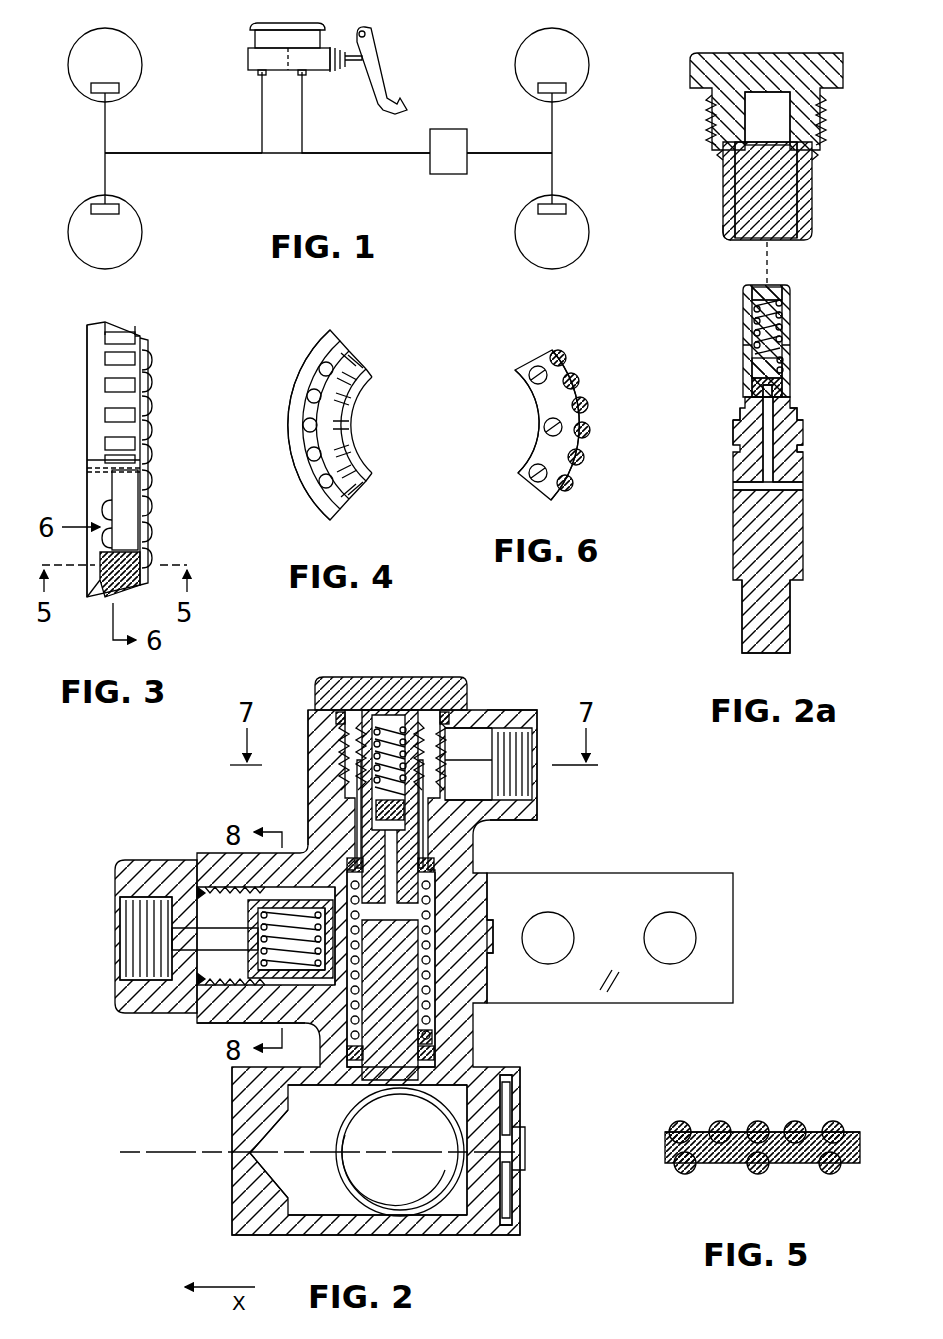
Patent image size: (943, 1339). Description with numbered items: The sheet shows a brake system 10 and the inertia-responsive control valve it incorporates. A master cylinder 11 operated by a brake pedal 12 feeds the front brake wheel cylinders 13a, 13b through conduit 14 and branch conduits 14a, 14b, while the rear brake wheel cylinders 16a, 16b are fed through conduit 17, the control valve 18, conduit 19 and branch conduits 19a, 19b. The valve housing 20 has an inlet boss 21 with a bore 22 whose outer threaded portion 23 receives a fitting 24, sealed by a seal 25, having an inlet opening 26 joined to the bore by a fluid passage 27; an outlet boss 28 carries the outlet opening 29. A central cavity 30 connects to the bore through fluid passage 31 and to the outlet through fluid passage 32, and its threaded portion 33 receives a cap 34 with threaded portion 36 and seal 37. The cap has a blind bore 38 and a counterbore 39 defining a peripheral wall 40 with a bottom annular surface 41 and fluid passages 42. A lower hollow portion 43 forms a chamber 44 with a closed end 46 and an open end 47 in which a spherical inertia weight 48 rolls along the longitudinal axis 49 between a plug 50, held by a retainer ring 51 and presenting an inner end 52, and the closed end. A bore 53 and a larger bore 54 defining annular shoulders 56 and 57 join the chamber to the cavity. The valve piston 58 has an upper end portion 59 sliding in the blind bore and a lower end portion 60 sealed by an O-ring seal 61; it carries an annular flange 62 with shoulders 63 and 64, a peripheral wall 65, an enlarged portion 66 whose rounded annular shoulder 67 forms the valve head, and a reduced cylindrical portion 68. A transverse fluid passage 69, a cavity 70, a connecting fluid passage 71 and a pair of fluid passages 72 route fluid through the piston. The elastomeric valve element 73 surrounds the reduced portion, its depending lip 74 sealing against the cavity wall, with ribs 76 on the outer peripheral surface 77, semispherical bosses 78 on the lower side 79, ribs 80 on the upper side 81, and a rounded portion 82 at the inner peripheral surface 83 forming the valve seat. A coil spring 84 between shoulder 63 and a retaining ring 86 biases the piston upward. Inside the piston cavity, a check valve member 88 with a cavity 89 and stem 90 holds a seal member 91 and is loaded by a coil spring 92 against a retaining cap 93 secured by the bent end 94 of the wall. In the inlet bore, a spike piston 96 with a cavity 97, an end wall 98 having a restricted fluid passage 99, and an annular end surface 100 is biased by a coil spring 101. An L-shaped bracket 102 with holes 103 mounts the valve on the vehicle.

In FIG. 1, the brake system 10 is at (466, 66).
In FIG. 1, the master cylinder 11 is at (250, 42).
In FIG. 1, the brake pedal 12 is at (383, 60).
In FIG. 1, the front brake wheel cylinder 13a is at (108, 78).
In FIG. 1, the front brake wheel cylinder 13b is at (108, 248).
In FIG. 1, the conduit 14 is at (222, 154).
In FIG. 1, the branch conduit 14a is at (103, 133).
In FIG. 1, the branch conduit 14b is at (103, 176).
In FIG. 1, the rear brake wheel cylinder 16a is at (553, 78).
In FIG. 1, the rear brake wheel cylinder 16b is at (553, 248).
In FIG. 1, the conduit 17 is at (355, 154).
In FIG. 1, the control valve 18 is at (447, 175).
In FIG. 2, the control valve 18 is at (206, 782).
In FIG. 1, the conduit 19 is at (507, 154).
In FIG. 1, the branch conduit 19a is at (553, 130).
In FIG. 1, the branch conduit 19b is at (553, 168).
In FIG. 2, the housing 20 is at (320, 792).
In FIG. 2, the inlet boss 21 is at (237, 1039).
In FIG. 2, the bore 22 is at (278, 888).
In FIG. 2, the outer threaded portion 23 is at (216, 888).
In FIG. 2, the fitting 24 is at (144, 860).
In FIG. 2, the seal 25 is at (200, 888).
In FIG. 2, the inlet opening 26 is at (125, 972).
In FIG. 2, the fluid passage 27 is at (172, 942).
In FIG. 2, the outlet boss 28 is at (525, 712).
In FIG. 2, the outlet opening 29 is at (530, 797).
In FIG. 2, the central cavity 30 is at (432, 942).
In FIG. 2, the fluid passage 31 is at (336, 980).
In FIG. 2, the fluid passage 32 is at (462, 780).
In FIG. 2, the threaded portion 33 is at (340, 772).
In FIG. 2A, the cap 34 is at (832, 58).
In FIG. 2, the cap 34 is at (436, 690).
In FIG. 2A, the threaded portion 36 is at (822, 118).
In FIG. 2, the seal 37 is at (446, 715).
In FIG. 2A, the central blind bore 38 is at (786, 128).
In FIG. 2A, the counterbore 39 is at (738, 205).
In FIG. 2A, the peripheral wall 40 is at (812, 205).
In FIG. 2A, the bottom annular surface 41 is at (725, 238).
In FIG. 2A, the fluid passages 42 is at (722, 155).
In FIG. 2, the lower hollow portion 43 is at (231, 1215).
In FIG. 2, the chamber 44 is at (312, 1220).
In FIG. 2, the closed end 46 is at (270, 1118).
In FIG. 2, the open end 47 is at (480, 1224).
In FIG. 2, the inertia weight 48 is at (400, 1152).
In FIG. 2, the longitudinal axis 49 is at (317, 1166).
In FIG. 2, the plug 50 is at (525, 1148).
In FIG. 2, the retainer ring 51 is at (514, 1212).
In FIG. 2, the inner end 52 is at (452, 1217).
In FIG. 2, the bore 53 is at (350, 1085).
In FIG. 2, the bore 54 is at (350, 1044).
In FIG. 2, the annular shoulder 56 is at (435, 1049).
In FIG. 2, the annular shoulder 57 is at (420, 1062).
In FIG. 2A, the valve piston 58 is at (803, 543).
In FIG. 2, the valve piston 58 is at (396, 976).
In FIG. 2A, the upper end portion 59 is at (790, 320).
In FIG. 2A, the lower end portion 60 is at (790, 618).
In FIG. 2, the O-ring seal 61 is at (350, 1062).
In FIG. 2A, the annular flange 62 is at (803, 450).
In FIG. 2A, the annular shoulder 63 is at (803, 458).
In FIG. 2A, the annular shoulder 64 is at (803, 445).
In FIG. 2A, the peripheral wall 65 is at (790, 300).
In FIG. 2A, the enlarged portion 66 is at (800, 418).
In FIG. 2A, the rounded annular shoulder 67 is at (733, 425).
In FIG. 2A, the reduced diameter cylindrical portion 68 is at (733, 437).
In FIG. 2A, the fluid passage 69 is at (740, 487).
In FIG. 2A, the cavity 70 is at (790, 345).
In FIG. 2A, the fluid passage 71 is at (768, 465).
In FIG. 2A, the fluid passages 72 is at (742, 345).
In FIG. 3, the valve element 73 is at (82, 352).
In FIG. 4, the valve element 73 is at (372, 342).
In FIG. 6, the valve element 73 is at (566, 344).
In FIG. 2, the valve element 73 is at (432, 867).
In FIG. 5, the valve element 73 is at (864, 1148).
In FIG. 3, the depending lip 74 is at (95, 598).
In FIG. 4, the depending lip 74 is at (318, 350).
In FIG. 3, the ribs 76 is at (105, 400).
In FIG. 4, the ribs 76 is at (306, 465).
In FIG. 6, the ribs 76 is at (572, 457).
In FIG. 4, the outer peripheral surface 77 is at (302, 445).
In FIG. 6, the outer peripheral surface 77 is at (572, 412).
In FIG. 3, the semispherical bosses 78 is at (100, 510).
In FIG. 6, the semispherical bosses 78 is at (530, 427).
In FIG. 5, the semispherical bosses 78 is at (690, 1168).
In FIG. 3, the lower side 79 is at (110, 480).
In FIG. 5, the lower side 79 is at (792, 1168).
In FIG. 3, the ribs 80 is at (150, 432).
In FIG. 4, the ribs 80 is at (345, 400).
In FIG. 5, the ribs 80 is at (832, 1128).
In FIG. 3, the upper side 81 is at (140, 517).
In FIG. 5, the upper side 81 is at (738, 1130).
In FIG. 4, the rounded portion 82 is at (352, 468).
In FIG. 4, the inner peripheral surface 83 is at (352, 430).
In FIG. 6, the inner peripheral surface 83 is at (530, 395).
In FIG. 2, the coil spring 84 is at (428, 980).
In FIG. 2, the retaining ring 86 is at (440, 1038).
In FIG. 2A, the check valve member 88 is at (782, 370).
In FIG. 2A, the cavity 89 is at (752, 390).
In FIG. 2A, the stem 90 is at (752, 365).
In FIG. 2A, the seal member 91 is at (782, 388).
In FIG. 2A, the coil spring 92 is at (752, 318).
In FIG. 2A, the retaining cap 93 is at (770, 290).
In FIG. 2A, the end 94 is at (745, 292).
In FIG. 2, the spike piston 96 is at (248, 968).
In FIG. 2, the cavity 97 is at (298, 985).
In FIG. 2, the end wall 98 is at (248, 913).
In FIG. 2, the restricted fluid passage 99 is at (250, 943).
In FIG. 2, the annular end surface 100 is at (350, 868).
In FIG. 2, the coil spring 101 is at (270, 985).
In FIG. 2, the L-shaped bracket 102 is at (616, 918).
In FIG. 2, the holes 103 is at (548, 964).